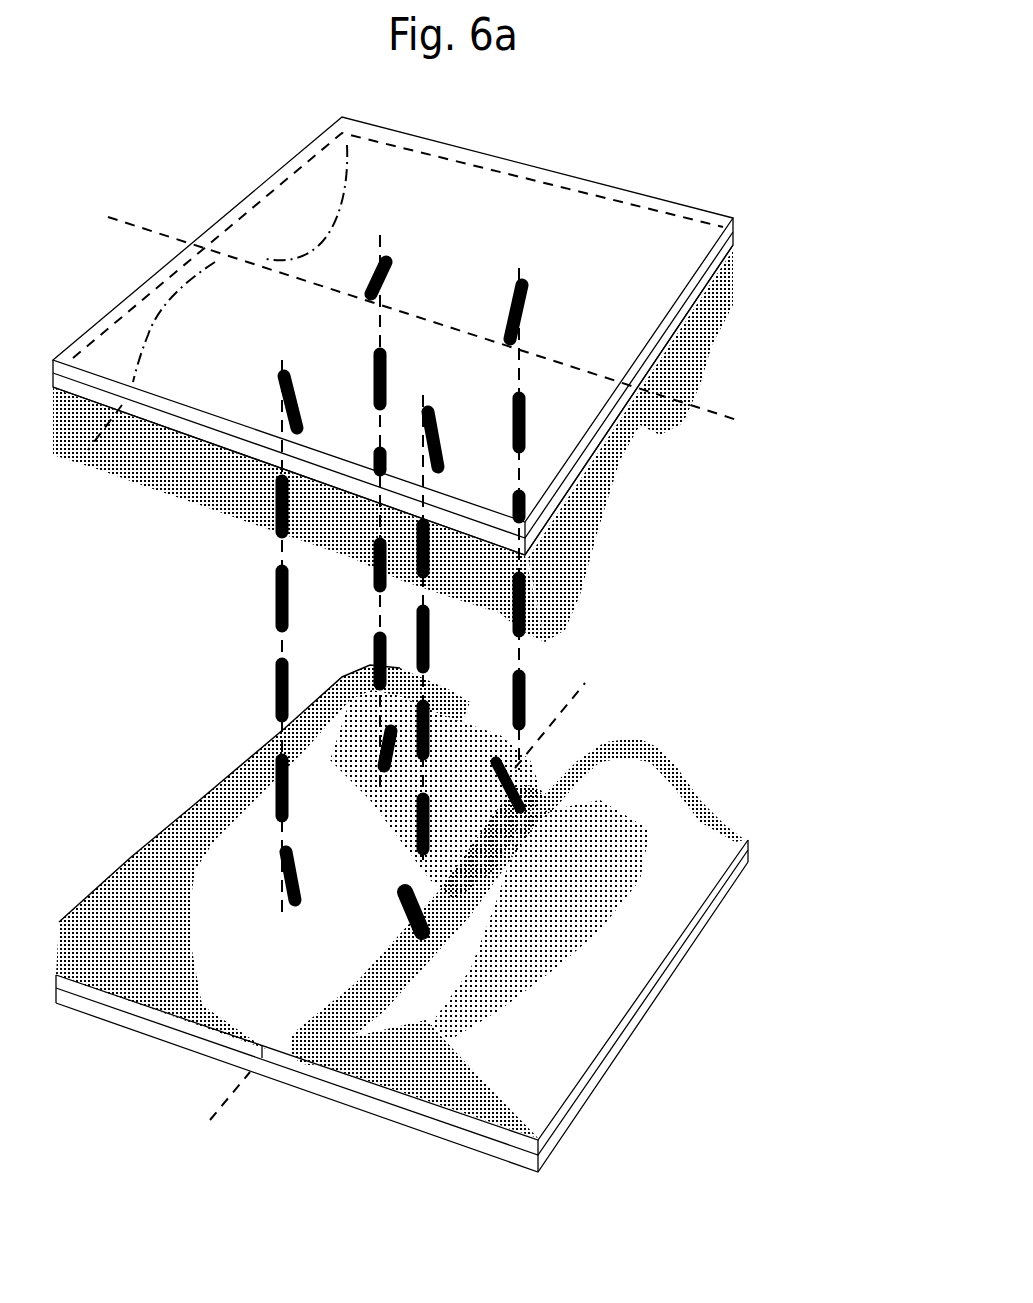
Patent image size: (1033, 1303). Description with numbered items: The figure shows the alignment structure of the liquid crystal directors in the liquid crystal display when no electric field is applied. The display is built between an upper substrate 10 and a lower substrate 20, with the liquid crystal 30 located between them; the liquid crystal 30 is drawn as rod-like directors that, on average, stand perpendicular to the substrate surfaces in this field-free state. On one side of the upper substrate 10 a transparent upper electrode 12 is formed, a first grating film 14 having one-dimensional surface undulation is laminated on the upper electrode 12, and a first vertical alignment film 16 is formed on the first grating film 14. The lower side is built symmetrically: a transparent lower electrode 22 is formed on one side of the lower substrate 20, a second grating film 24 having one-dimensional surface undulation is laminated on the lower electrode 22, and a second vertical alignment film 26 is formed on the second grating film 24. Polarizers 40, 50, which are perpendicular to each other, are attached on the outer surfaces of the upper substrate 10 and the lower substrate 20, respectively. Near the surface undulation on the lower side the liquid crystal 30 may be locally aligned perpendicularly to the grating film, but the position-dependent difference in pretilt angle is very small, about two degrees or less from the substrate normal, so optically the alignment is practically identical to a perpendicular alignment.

The polarizer 40 is at (733, 220).
The upper substrate 10 is at (733, 237).
The upper electrode 12 is at (733, 250).
The first grating film 14 is at (733, 303).
The first vertical alignment film 16 is at (713, 360).
The liquid crystal 30 is at (545, 675).
The second vertical alignment film 26 is at (687, 785).
The second grating film 24 is at (750, 833).
The lower electrode 22 is at (750, 840).
The lower substrate 20 is at (750, 853).
The polarizer 50 is at (745, 870).